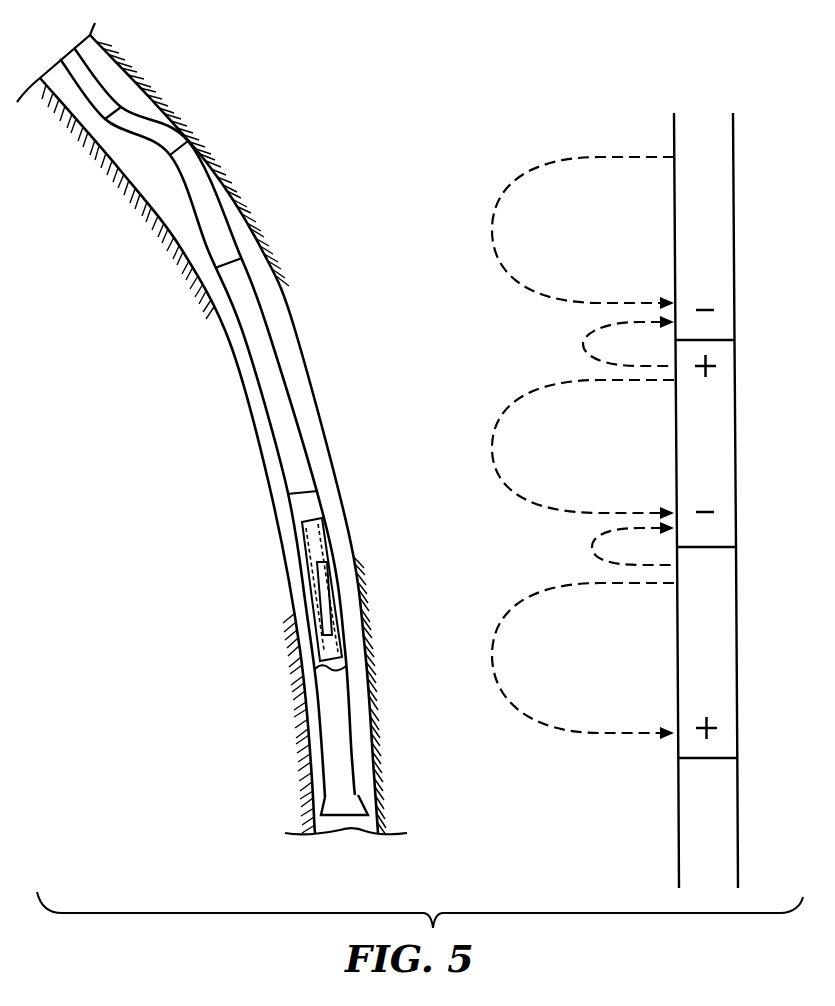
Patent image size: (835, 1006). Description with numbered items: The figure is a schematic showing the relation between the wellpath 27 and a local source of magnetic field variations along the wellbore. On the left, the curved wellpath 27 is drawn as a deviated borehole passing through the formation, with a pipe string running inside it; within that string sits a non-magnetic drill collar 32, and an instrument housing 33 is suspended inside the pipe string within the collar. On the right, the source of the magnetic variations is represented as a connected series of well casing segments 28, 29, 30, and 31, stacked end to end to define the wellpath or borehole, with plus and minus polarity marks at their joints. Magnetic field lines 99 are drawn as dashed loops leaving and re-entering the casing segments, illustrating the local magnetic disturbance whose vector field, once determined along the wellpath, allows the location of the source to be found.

The wellpath 27 is at (188, 141).
The well casing segment 28 is at (736, 194).
The well casing segment 29 is at (738, 414).
The well casing segment 30 is at (737, 612).
The well casing segment 31 is at (720, 823).
The non-magnetic drill collar 32 is at (303, 549).
The instrument housing 33 is at (318, 595).
The magnetic field lines 99 is at (530, 160).